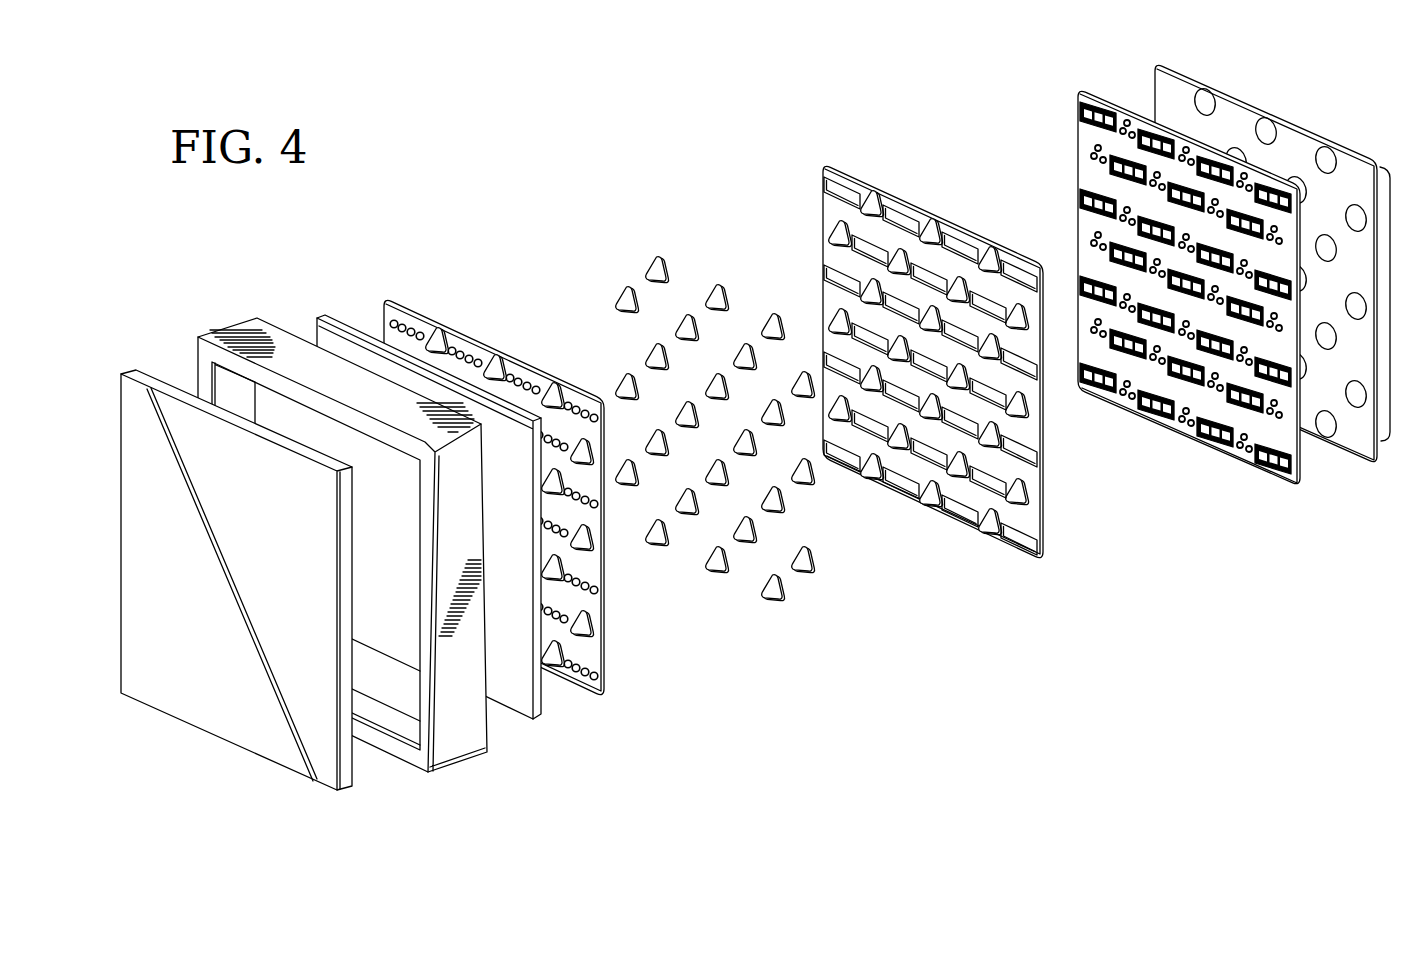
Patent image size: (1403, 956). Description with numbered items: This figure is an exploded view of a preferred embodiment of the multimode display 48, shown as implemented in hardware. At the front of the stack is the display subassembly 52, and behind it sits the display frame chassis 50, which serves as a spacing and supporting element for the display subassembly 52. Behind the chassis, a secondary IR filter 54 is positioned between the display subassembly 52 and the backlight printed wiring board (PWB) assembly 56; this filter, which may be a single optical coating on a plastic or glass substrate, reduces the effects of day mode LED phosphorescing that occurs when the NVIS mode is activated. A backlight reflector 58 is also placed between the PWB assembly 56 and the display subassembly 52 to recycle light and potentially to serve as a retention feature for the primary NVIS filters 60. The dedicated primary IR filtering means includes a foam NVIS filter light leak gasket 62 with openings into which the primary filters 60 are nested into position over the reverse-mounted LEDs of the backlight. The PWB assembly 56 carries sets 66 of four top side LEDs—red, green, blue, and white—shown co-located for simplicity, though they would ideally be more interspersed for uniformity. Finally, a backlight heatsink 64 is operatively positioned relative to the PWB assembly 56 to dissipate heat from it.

The multimode display 48 is at (530, 197).
The display frame chassis 50 is at (462, 770).
The display subassembly 52 is at (217, 744).
The secondary IR filter 54 is at (522, 710).
The backlight printed wiring board (PWB) assembly 56 is at (1189, 272).
The backlight reflector 58 is at (607, 676).
The primary NVIS filters 60 is at (713, 480).
The foam NVIS filter light leak gasket 62 is at (971, 538).
The backlight heatsink 64 is at (1375, 468).
The sets of four top side LEDs 66 is at (1113, 110).